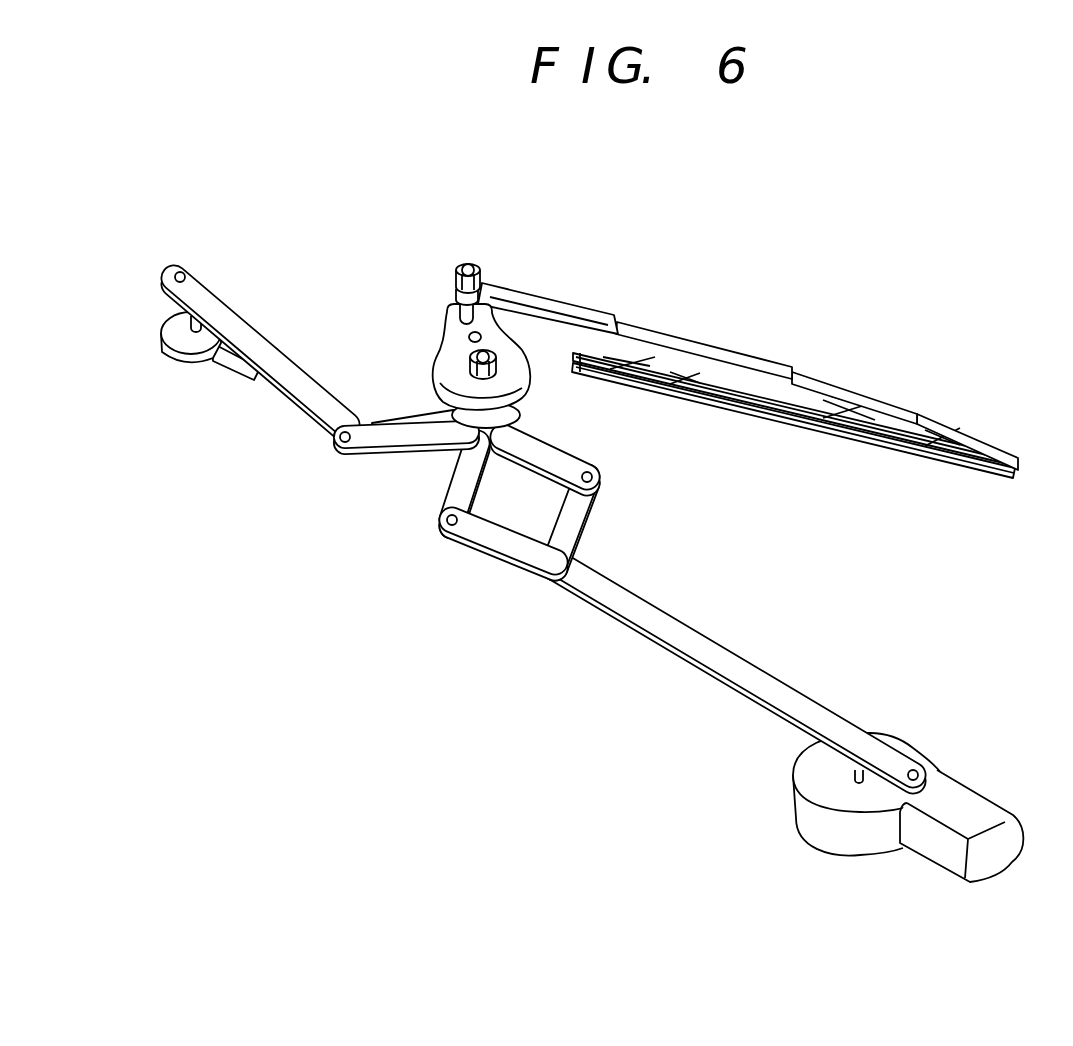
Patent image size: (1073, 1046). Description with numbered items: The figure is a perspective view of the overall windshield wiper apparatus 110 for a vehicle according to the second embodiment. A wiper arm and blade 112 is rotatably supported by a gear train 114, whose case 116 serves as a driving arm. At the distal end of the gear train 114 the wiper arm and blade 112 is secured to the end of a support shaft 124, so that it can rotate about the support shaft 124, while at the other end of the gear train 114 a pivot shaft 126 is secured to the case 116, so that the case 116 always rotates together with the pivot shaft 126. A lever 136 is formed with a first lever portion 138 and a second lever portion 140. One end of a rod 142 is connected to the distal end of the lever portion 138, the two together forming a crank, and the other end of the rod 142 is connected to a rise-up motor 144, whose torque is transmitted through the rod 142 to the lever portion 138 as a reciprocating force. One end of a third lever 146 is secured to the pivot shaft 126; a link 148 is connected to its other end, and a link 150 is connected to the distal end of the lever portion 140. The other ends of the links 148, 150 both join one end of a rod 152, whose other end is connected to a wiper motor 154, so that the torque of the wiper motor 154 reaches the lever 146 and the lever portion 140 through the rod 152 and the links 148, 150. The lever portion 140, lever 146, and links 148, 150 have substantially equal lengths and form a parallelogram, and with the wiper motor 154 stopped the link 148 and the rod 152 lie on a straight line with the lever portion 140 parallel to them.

The windshield wiper apparatus 110 is at (620, 238).
The wiper arm and blade 112 is at (737, 351).
The gear train 114 is at (436, 352).
The case 116 is at (450, 383).
The support shaft 124 is at (450, 308).
The pivot shaft 126 is at (494, 360).
The lever 136 is at (372, 458).
The lever portion 138 is at (393, 448).
The lever portion 140 is at (563, 453).
The rod 142 is at (283, 409).
The rise-up motor 144 is at (167, 352).
The lever 146 is at (452, 476).
The link 148 is at (488, 558).
The link 150 is at (594, 524).
The rod 152 is at (692, 664).
The wiper motor 154 is at (806, 835).